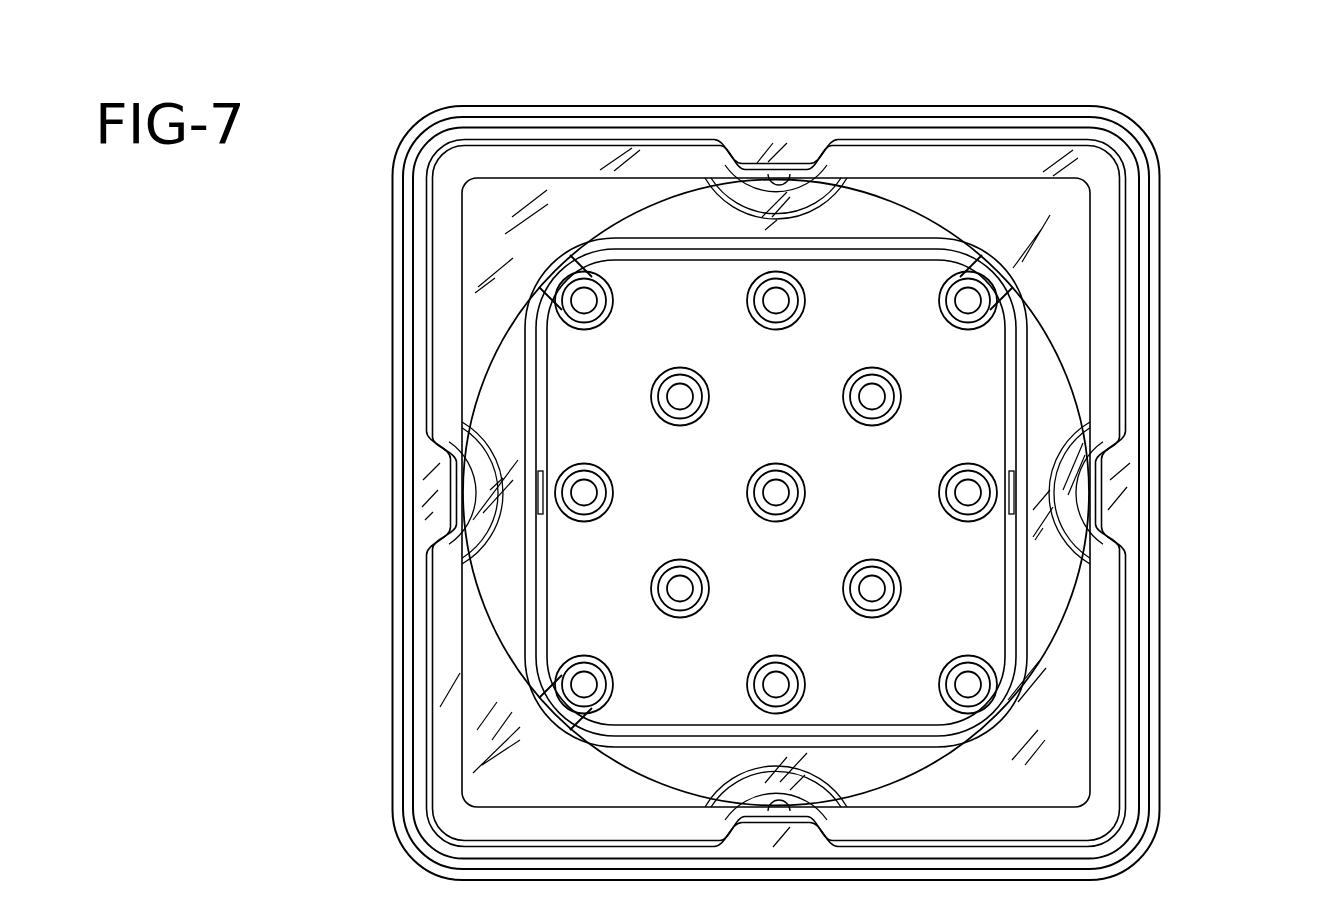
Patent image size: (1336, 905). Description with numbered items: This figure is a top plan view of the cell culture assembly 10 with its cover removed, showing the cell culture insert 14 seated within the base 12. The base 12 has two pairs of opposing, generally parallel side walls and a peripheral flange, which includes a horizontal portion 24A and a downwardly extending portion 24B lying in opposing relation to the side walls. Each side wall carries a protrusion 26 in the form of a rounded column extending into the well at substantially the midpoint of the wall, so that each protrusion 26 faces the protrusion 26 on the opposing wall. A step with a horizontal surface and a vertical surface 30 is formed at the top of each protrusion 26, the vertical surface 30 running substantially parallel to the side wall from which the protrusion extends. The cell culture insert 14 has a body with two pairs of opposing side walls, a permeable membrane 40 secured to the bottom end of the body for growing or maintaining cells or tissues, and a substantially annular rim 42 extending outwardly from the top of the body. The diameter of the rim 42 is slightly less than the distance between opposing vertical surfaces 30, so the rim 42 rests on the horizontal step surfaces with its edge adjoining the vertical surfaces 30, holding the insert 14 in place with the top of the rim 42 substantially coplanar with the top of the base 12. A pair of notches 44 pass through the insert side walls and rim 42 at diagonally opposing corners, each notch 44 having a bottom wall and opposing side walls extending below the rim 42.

The cell culture assembly 10 is at (1201, 142).
The base 12 is at (1160, 677).
The cell culture insert 14 is at (1066, 616).
The horizontal portion 24A is at (1142, 747).
The downwardly extending portion 24B is at (1162, 793).
The protrusion 26 is at (756, 148).
The vertical surface 30 is at (790, 178).
The permeable membrane 40 is at (585, 583).
The annular rim 42 is at (497, 378).
The notch 44 is at (553, 707).